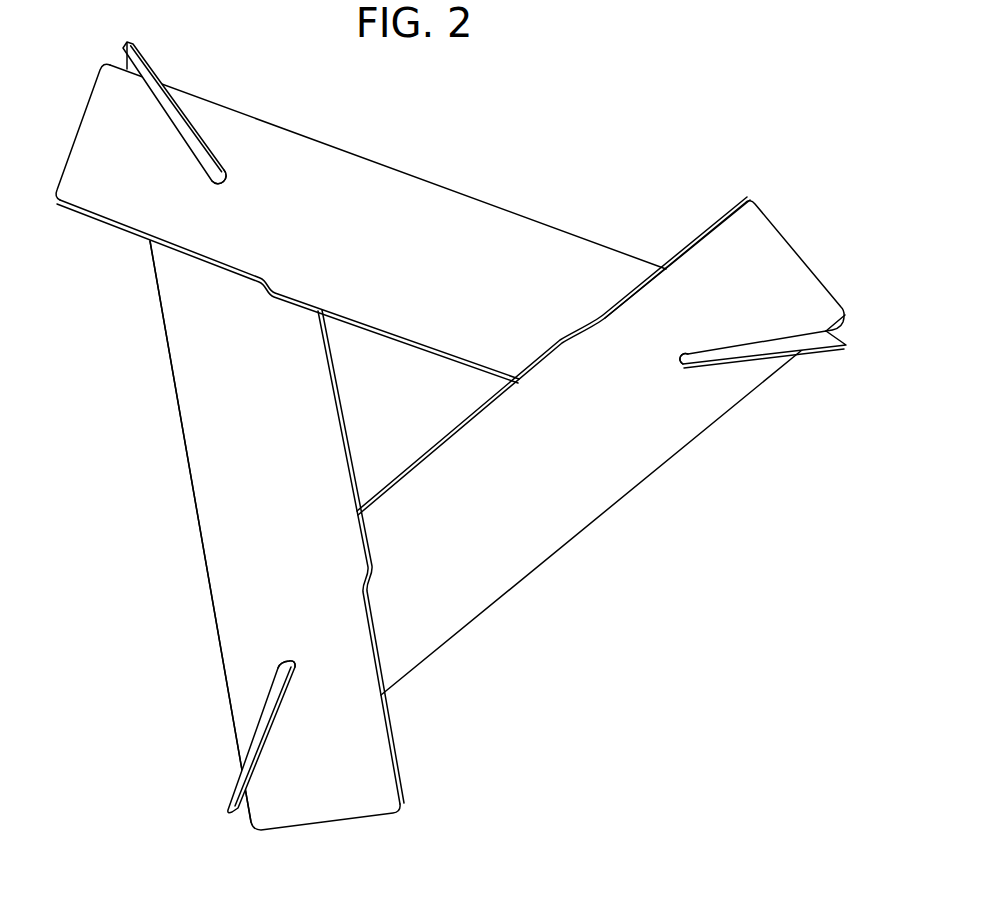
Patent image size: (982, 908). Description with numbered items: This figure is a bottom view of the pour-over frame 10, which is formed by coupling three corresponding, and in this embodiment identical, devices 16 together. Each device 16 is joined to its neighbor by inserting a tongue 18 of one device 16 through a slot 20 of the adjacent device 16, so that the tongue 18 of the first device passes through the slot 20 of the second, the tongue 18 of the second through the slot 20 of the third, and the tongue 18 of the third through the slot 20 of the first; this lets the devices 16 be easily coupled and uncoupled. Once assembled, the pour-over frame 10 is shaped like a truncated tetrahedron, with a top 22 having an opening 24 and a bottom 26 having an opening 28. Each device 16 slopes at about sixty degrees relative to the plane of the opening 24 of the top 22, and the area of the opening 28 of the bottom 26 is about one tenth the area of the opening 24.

The pour-over frame 10 is at (451, 434).
The device 16 is at (330, 142).
The tongue 18 is at (178, 93).
The slot 20 is at (216, 185).
The top 22 is at (593, 242).
The opening 24 is at (426, 162).
The bottom 26 is at (325, 348).
The opening 28 is at (362, 440).